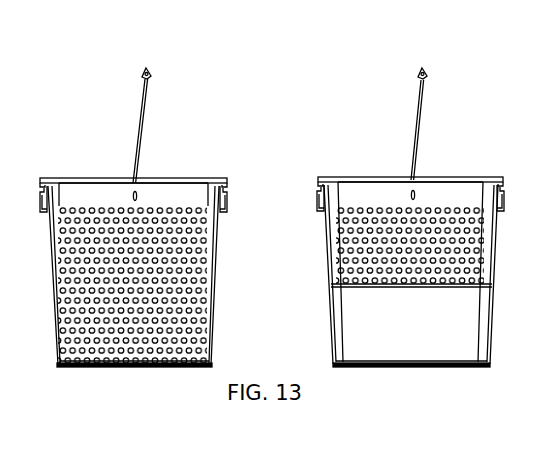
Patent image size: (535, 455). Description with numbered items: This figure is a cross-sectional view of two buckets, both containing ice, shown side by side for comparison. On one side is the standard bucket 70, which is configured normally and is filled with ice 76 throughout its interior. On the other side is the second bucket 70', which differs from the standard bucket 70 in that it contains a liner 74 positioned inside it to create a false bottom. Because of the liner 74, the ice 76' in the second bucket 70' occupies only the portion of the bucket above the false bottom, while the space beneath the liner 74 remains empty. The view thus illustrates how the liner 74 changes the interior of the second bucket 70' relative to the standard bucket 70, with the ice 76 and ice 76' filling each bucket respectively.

The standard bucket 70 is at (133, 226).
The second bucket 70' is at (410, 228).
The liner 74 is at (423, 289).
The ice 76 is at (138, 257).
The ice 76' is at (415, 217).